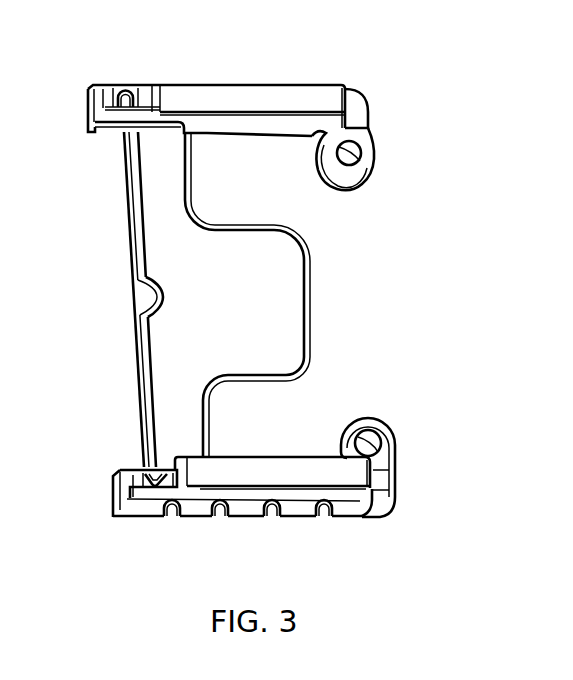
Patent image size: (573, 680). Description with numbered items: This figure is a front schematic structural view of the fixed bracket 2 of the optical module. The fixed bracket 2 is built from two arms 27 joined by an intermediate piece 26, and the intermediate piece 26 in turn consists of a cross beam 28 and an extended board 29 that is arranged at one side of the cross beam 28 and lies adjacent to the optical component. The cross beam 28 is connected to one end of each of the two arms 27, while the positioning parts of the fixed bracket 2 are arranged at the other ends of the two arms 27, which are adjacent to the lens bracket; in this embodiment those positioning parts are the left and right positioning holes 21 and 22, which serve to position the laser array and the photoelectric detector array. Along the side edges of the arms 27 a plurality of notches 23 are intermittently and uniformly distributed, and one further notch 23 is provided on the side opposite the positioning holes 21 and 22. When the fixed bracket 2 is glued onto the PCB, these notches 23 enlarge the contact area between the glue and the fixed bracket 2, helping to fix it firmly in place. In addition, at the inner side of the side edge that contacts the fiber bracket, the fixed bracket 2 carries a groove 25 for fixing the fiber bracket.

The fixed bracket 2 is at (185, 80).
The positioning hole 21 is at (357, 155).
The positioning hole 22 is at (373, 441).
The notch 23 is at (135, 305).
The groove 25 is at (126, 104).
The intermediate piece 26 is at (158, 233).
The arm 27 is at (270, 132).
The cross beam 28 is at (190, 192).
The extended board 29 is at (297, 307).